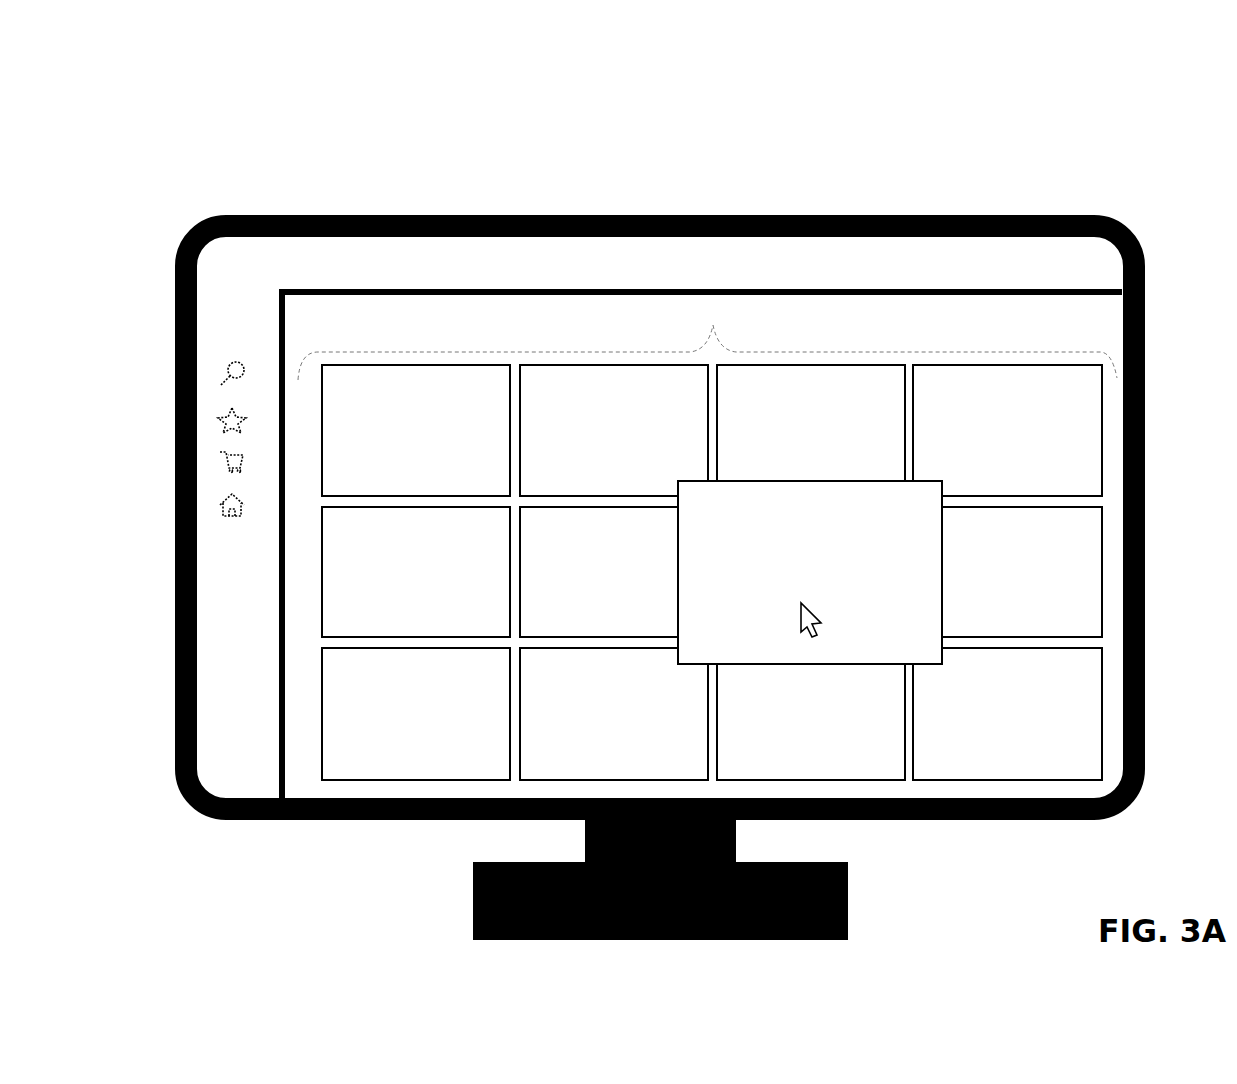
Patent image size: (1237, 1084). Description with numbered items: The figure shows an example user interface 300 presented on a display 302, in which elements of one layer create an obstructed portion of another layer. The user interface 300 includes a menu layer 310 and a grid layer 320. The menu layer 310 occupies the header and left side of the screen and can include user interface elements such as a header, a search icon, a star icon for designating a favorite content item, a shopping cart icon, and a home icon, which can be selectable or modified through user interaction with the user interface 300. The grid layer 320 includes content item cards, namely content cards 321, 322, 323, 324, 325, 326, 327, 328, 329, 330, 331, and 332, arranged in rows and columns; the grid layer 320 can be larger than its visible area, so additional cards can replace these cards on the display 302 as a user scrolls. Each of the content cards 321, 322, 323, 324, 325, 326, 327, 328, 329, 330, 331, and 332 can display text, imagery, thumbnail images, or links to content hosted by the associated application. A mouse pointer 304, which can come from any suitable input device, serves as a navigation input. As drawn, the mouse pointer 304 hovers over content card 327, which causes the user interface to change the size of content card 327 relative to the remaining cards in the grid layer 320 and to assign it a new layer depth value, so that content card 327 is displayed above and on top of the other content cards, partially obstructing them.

The user interface 300 is at (262, 78).
The display 302 is at (1026, 202).
The mouse pointer 304 is at (816, 629).
The menu layer 310 is at (604, 272).
The grid layer 320 is at (721, 306).
The content card 321 is at (416, 430).
The content card 322 is at (614, 430).
The content card 323 is at (811, 430).
The content card 324 is at (1007, 430).
The content card 325 is at (416, 572).
The content card 326 is at (614, 572).
The content card 327 is at (810, 572).
The content card 328 is at (1007, 572).
The content card 329 is at (416, 714).
The content card 330 is at (614, 714).
The content card 331 is at (811, 714).
The content card 332 is at (1007, 714).